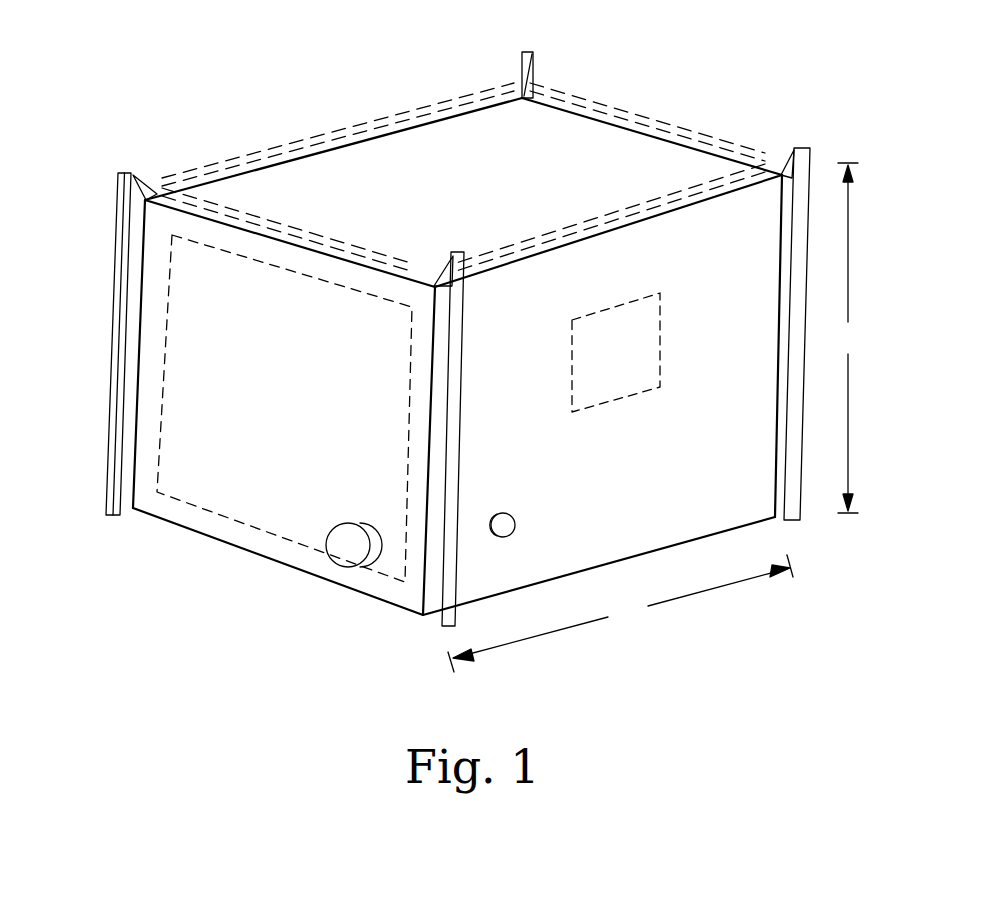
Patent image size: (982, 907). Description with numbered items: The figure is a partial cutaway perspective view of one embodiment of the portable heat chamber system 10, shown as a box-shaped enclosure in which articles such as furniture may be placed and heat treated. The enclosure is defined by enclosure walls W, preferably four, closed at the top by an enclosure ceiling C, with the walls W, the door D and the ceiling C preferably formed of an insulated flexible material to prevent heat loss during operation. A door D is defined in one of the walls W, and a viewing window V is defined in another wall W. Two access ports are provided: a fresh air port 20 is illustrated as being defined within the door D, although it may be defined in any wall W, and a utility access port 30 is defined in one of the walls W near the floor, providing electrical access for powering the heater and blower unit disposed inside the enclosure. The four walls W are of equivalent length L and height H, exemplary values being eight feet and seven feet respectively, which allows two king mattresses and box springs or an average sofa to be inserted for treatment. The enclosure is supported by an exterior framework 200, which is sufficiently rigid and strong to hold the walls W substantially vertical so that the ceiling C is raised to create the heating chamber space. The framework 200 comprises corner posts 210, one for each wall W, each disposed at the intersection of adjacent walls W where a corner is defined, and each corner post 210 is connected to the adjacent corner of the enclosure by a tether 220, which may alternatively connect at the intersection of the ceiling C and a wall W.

The portable heat chamber system 10 is at (686, 163).
The fresh air port 20 is at (350, 545).
The utility access port 30 is at (505, 531).
The exterior framework 200 is at (412, 90).
The corner post 210 is at (521, 56).
The tether 220 is at (140, 178).
The enclosure ceiling C is at (356, 172).
The door D is at (212, 497).
The height H is at (848, 338).
The length L is at (620, 613).
The viewing window V is at (586, 350).
The enclosure wall W is at (155, 312).